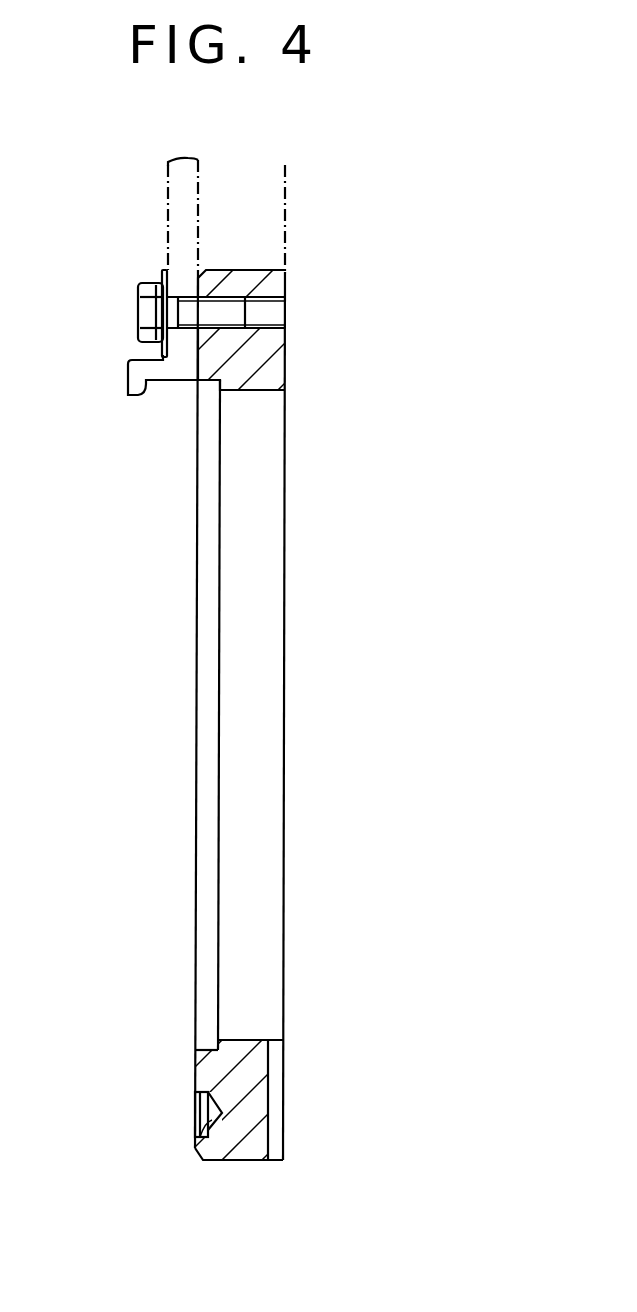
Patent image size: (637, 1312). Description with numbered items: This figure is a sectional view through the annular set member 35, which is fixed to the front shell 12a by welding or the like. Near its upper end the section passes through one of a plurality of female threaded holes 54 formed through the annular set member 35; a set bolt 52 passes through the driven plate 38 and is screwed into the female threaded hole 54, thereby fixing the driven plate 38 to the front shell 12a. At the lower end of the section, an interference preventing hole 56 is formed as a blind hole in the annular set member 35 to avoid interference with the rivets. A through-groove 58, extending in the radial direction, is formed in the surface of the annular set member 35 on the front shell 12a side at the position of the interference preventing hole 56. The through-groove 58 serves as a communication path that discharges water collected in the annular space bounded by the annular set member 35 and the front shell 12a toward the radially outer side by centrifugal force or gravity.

The front shell 12a is at (285, 187).
The driven plate 38 is at (185, 210).
The set bolt 52 is at (152, 312).
The female threaded hole 54 is at (258, 301).
The annular set member 35 is at (247, 358).
The interference preventing hole 56 is at (195, 1128).
The through-groove 58 is at (275, 1118).